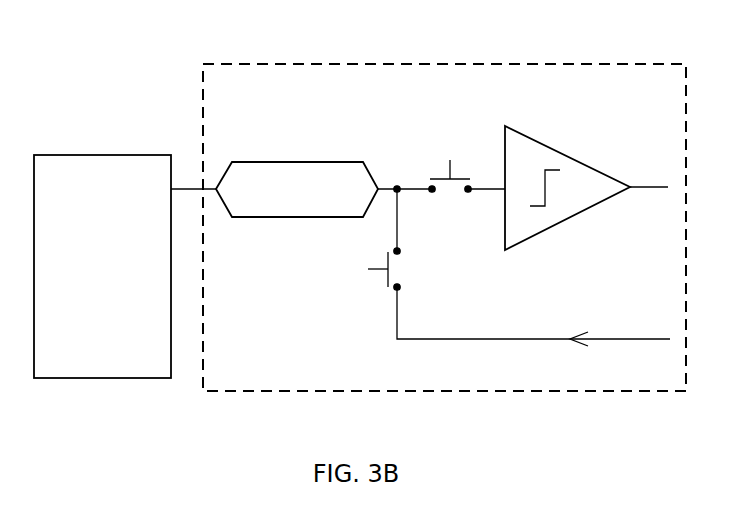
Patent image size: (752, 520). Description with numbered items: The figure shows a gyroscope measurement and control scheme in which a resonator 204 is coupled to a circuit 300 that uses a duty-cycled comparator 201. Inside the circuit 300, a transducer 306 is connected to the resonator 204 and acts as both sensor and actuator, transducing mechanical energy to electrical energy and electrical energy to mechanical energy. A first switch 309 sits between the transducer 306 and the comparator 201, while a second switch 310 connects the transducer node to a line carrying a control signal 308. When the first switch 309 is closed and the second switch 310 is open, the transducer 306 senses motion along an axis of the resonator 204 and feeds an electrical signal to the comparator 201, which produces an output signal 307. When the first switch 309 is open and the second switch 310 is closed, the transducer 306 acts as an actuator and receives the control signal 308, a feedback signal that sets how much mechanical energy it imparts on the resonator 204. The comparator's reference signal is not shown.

The circuit 300 is at (677, 87).
The resonator 204 is at (107, 237).
The transducer 306 is at (297, 159).
The first switch 309 is at (415, 154).
The comparator 201 is at (567, 168).
The output signal 307 is at (649, 175).
The second switch 310 is at (350, 290).
The control signal 308 is at (533, 316).